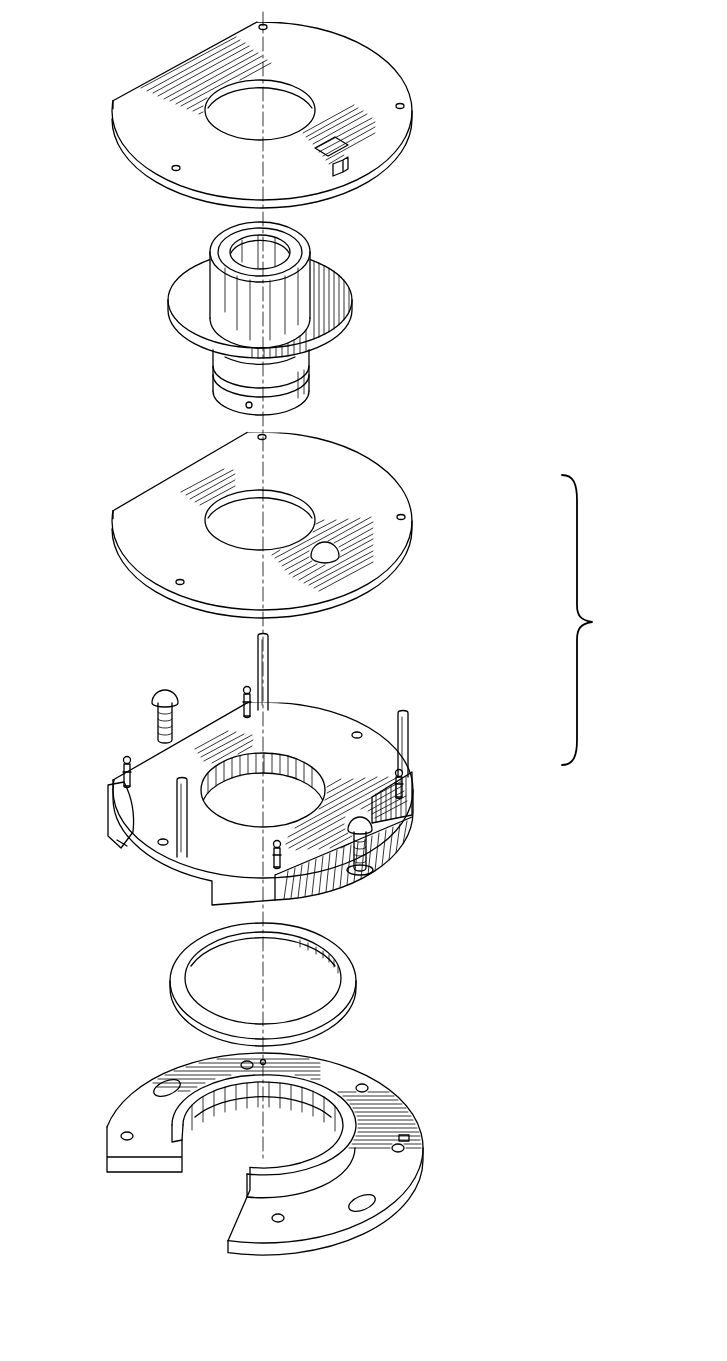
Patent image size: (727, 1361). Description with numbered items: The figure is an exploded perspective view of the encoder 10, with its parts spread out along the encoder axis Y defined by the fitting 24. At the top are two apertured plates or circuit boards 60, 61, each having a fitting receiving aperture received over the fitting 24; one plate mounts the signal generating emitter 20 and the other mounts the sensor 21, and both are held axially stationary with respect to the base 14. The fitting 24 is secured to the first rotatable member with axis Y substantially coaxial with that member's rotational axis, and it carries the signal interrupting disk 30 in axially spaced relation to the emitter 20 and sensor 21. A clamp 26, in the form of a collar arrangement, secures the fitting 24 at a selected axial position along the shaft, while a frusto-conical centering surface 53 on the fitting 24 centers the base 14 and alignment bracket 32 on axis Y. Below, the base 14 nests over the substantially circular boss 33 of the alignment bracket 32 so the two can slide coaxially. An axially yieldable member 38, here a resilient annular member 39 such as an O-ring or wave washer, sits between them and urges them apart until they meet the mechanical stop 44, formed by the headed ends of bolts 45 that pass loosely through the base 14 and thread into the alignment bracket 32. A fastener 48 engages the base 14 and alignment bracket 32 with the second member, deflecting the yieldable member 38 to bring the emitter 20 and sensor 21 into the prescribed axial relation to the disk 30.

The encoder 10 is at (446, 306).
The base 14 is at (428, 801).
The signal generating emitter 20 is at (345, 570).
The sensor 21 is at (356, 147).
The fitting 24 is at (322, 269).
The clamp 26 is at (205, 384).
The signal interrupting disk 30 is at (348, 308).
The alignment bracket 32 is at (272, 1149).
The boss 33 is at (253, 1188).
The axially yieldable member 38 is at (265, 984).
The resilient annular member 39 is at (352, 970).
The mechanical stop 44 is at (268, 686).
The bolts 45 is at (243, 694).
The fastener 48 is at (151, 699).
The centering surface 53 is at (313, 355).
The plate or circuit board 60 is at (366, 500).
The plate or circuit board 61 is at (366, 83).
The encoder axis Y is at (262, 467).